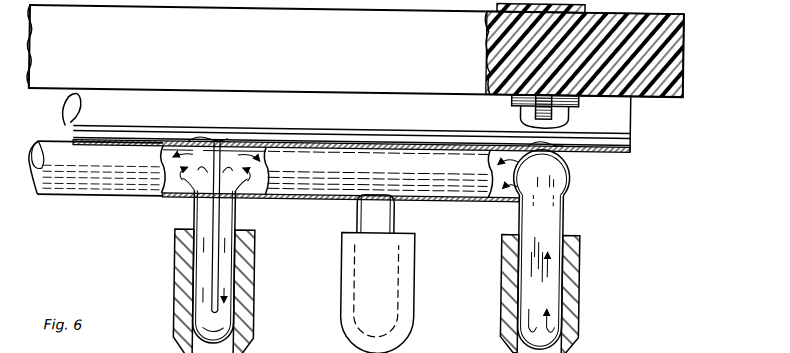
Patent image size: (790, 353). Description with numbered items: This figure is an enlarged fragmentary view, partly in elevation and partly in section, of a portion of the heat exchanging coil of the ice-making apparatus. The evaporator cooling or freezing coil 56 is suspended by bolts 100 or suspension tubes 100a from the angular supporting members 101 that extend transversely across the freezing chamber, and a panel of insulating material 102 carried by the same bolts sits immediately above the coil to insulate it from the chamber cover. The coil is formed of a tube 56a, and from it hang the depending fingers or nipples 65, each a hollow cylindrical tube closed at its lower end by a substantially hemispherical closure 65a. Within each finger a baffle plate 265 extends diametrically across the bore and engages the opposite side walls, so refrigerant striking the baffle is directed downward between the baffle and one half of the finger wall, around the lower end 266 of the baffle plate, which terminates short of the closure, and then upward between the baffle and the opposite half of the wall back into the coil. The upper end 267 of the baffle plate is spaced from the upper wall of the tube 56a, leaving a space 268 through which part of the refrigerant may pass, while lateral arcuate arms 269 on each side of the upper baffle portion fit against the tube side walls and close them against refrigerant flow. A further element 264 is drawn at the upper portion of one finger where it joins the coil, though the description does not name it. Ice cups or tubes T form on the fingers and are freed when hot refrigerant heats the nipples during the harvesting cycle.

The angular supporting members 101 is at (584, 3).
The panel of insulating material 102 is at (684, 63).
The bolts 100 is at (575, 107).
The suspension tubes 100a is at (632, 121).
The space 268 is at (167, 158).
The upper end of the baffle plate 267 is at (252, 137).
The evaporator cooling coil or freezing coil 56 is at (137, 173).
The tube 56a is at (88, 163).
The lateral substantially semi-circular or arcuate arms 269 is at (492, 192).
The depending fingers or nipples 65 is at (240, 210).
The baffle plate 265 is at (240, 237).
The bulb 264 is at (572, 169).
The lower end of the baffle plate 266 is at (246, 287).
The substantially hemispherical closure 65a is at (258, 340).
The ice cups or tubes T is at (255, 313).